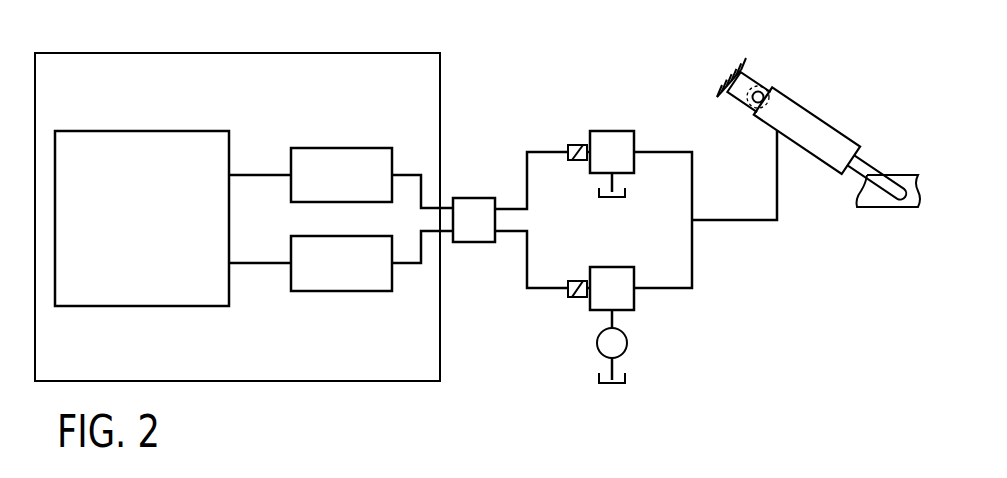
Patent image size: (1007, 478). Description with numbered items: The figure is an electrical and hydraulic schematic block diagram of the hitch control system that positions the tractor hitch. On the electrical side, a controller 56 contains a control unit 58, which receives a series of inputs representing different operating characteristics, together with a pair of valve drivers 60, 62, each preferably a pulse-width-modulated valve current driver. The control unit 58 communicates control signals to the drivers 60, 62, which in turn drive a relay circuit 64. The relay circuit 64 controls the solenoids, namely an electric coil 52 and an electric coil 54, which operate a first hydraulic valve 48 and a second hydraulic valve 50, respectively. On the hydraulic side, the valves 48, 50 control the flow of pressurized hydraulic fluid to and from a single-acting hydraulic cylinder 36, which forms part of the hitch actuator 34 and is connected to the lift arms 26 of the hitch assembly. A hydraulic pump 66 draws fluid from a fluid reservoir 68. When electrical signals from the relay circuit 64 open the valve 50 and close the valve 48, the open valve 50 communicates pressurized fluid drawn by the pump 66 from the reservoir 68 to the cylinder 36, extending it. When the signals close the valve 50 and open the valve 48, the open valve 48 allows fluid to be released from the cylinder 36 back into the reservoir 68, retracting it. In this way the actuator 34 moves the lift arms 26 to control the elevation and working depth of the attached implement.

The lift arms 26 is at (863, 208).
The hitch actuator 34 is at (811, 110).
The hydraulic cylinder 36 is at (825, 125).
The hydraulic valve 48 is at (612, 130).
The hydraulic valve 50 is at (635, 300).
The electric coil 52 is at (577, 143).
The electric coil 54 is at (577, 299).
The controller 56 is at (332, 382).
The control unit 58 is at (177, 130).
The valve driver 60 is at (342, 147).
The valve driver 62 is at (340, 292).
The relay circuit 64 is at (473, 197).
The hydraulic pump 66 is at (628, 343).
The fluid reservoir 68 is at (625, 192).